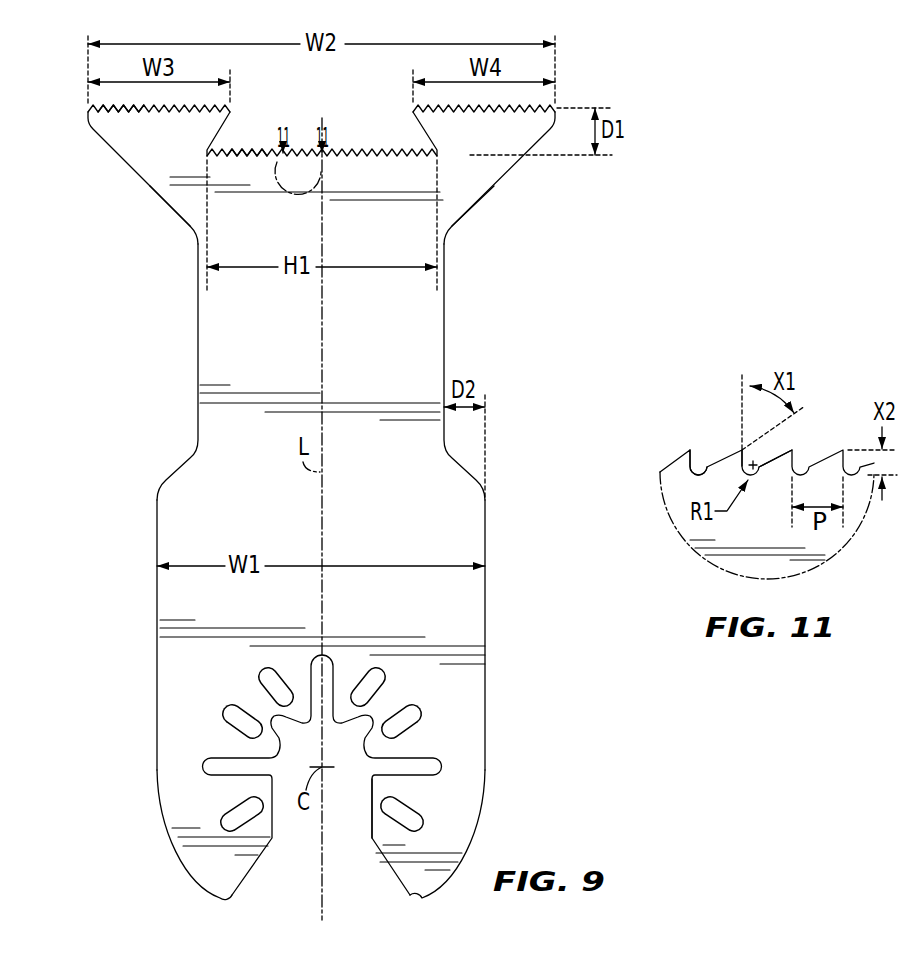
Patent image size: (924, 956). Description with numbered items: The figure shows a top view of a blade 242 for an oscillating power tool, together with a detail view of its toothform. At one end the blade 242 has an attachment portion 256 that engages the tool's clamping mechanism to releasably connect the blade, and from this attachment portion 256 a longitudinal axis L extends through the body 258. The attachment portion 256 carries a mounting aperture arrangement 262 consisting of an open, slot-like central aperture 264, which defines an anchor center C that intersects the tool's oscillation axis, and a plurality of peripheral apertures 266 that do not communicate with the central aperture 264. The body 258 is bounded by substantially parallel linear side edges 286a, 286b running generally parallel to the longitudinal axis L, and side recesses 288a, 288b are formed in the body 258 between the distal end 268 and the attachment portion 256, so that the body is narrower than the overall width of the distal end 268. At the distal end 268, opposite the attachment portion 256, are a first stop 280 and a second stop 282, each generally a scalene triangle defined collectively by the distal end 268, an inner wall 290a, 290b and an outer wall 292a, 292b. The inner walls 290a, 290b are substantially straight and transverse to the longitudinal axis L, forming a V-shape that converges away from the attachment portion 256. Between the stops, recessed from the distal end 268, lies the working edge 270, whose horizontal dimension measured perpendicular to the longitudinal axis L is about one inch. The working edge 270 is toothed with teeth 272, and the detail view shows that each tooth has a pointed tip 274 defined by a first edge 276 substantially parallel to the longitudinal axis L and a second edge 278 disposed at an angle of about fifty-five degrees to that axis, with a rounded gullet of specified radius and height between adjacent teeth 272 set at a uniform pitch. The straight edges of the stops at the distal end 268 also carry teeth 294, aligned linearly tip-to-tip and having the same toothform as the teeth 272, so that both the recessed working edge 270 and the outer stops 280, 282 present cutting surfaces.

In FIG. 9, the blade 242 is at (602, 73).
In FIG. 9, the attachment portion 256 is at (193, 765).
In FIG. 9, the body 258 is at (397, 313).
In FIG. 9, the mounting aperture arrangement 262 is at (434, 729).
In FIG. 9, the central aperture 264 is at (370, 800).
In FIG. 9, the peripheral apertures 266 is at (262, 683).
In FIG. 9, the distal end 268 is at (82, 103).
In FIG. 9, the working edge 270 is at (363, 158).
In FIG. 9, the teeth 272 is at (233, 158).
In FIG. 11, the teeth 272 is at (680, 462).
In FIG. 11, the pointed tip 274 is at (703, 452).
In FIG. 11, the first edge 276 is at (763, 447).
In FIG. 11, the second edge 278 is at (740, 452).
In FIG. 9, the first stop 280 is at (157, 135).
In FIG. 9, the second stop 282 is at (490, 135).
In FIG. 9, the side edge 286a is at (157, 540).
In FIG. 9, the side edge 286b is at (485, 548).
In FIG. 9, the side recess 288a is at (178, 330).
In FIG. 9, the side recess 288b is at (465, 329).
In FIG. 9, the inner wall 290a is at (220, 132).
In FIG. 9, the inner wall 290b is at (423, 133).
In FIG. 9, the outer wall 292a is at (157, 184).
In FIG. 9, the outer wall 292b is at (497, 182).
In FIG. 9, the teeth 294 is at (140, 113).